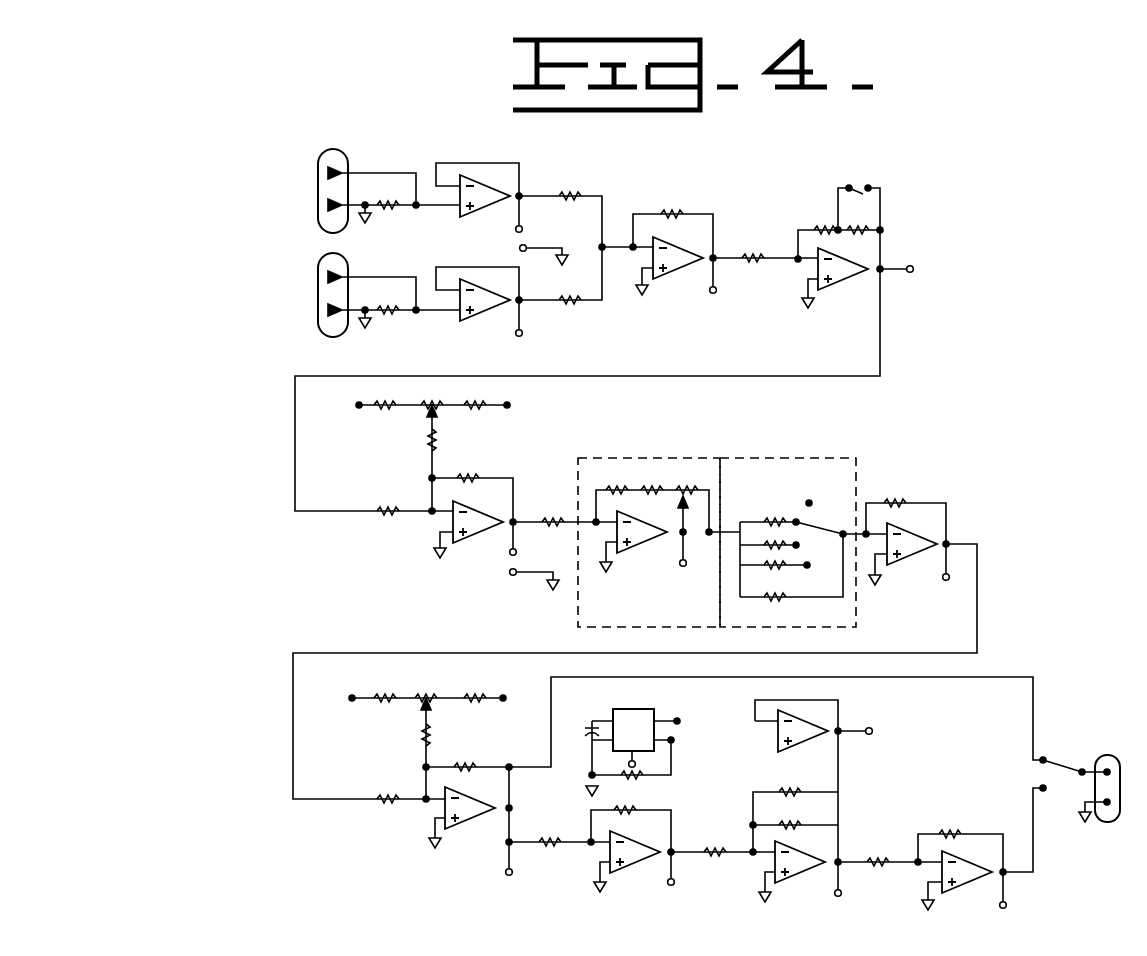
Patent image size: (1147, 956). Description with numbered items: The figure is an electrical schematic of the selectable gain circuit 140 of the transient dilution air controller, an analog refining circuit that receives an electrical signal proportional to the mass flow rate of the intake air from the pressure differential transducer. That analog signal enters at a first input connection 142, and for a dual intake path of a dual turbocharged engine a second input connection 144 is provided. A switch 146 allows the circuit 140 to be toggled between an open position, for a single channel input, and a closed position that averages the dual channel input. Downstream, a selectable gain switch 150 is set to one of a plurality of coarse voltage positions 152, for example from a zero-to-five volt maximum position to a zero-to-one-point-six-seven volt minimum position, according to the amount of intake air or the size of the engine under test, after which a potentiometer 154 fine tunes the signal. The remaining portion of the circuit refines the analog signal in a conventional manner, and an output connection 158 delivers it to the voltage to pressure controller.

The selectable gain circuit 140 is at (653, 529).
The first input connection 142 is at (318, 188).
The second input connection 144 is at (318, 298).
The switch 146 is at (868, 184).
The selectable gain switch 150 is at (790, 456).
The coarse voltage positions 152 is at (808, 503).
The potentiometer 154 is at (630, 456).
The output connection 158 is at (1107, 754).